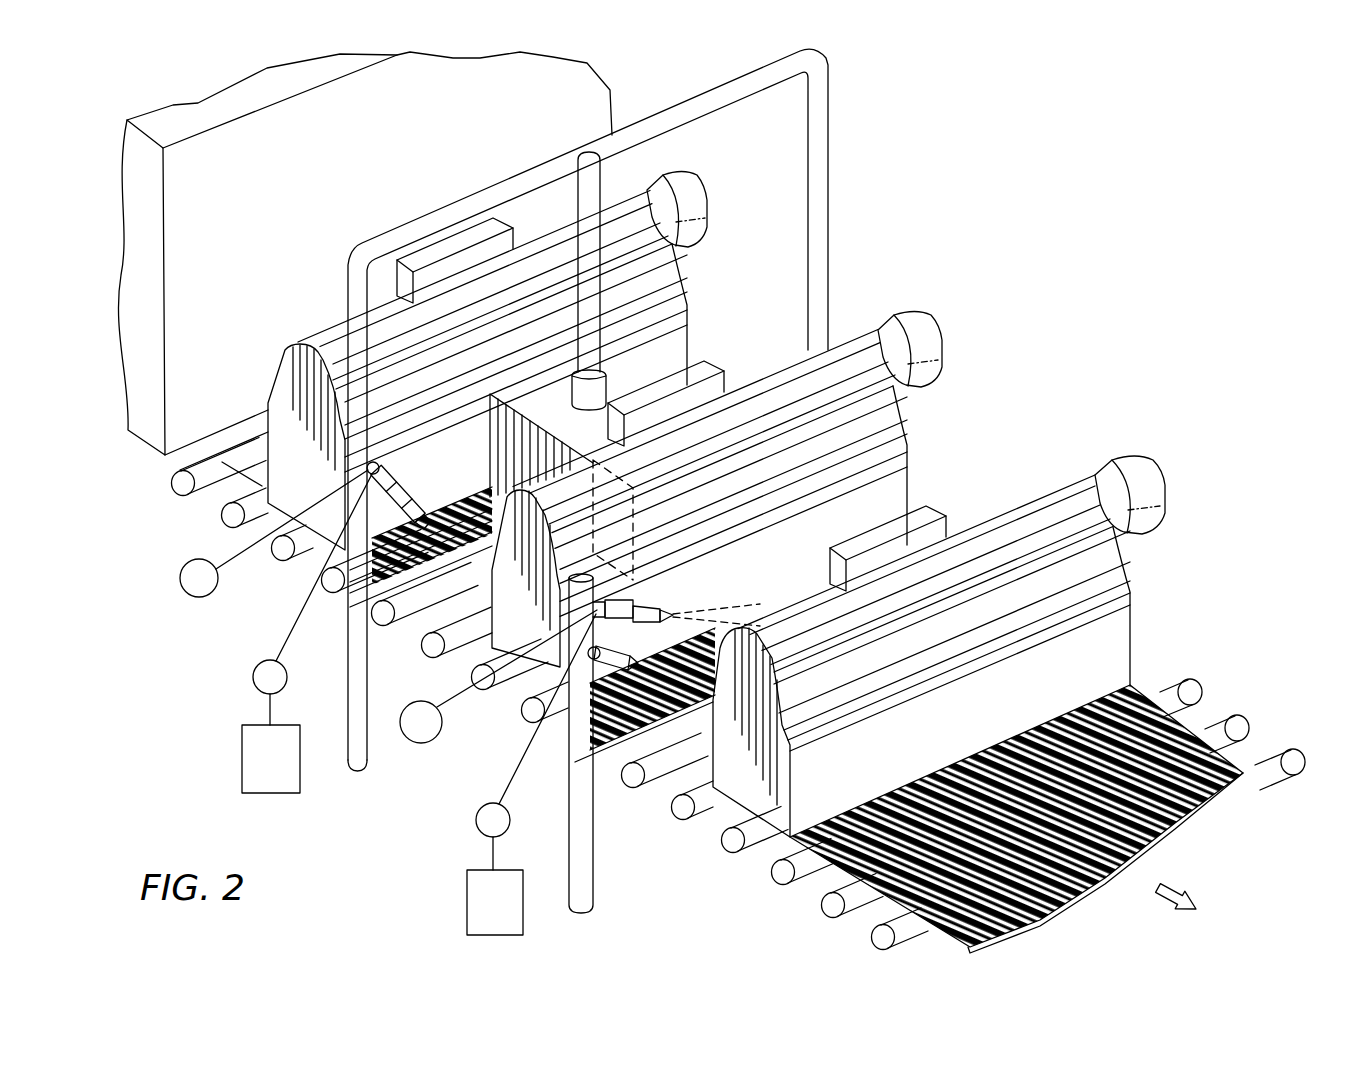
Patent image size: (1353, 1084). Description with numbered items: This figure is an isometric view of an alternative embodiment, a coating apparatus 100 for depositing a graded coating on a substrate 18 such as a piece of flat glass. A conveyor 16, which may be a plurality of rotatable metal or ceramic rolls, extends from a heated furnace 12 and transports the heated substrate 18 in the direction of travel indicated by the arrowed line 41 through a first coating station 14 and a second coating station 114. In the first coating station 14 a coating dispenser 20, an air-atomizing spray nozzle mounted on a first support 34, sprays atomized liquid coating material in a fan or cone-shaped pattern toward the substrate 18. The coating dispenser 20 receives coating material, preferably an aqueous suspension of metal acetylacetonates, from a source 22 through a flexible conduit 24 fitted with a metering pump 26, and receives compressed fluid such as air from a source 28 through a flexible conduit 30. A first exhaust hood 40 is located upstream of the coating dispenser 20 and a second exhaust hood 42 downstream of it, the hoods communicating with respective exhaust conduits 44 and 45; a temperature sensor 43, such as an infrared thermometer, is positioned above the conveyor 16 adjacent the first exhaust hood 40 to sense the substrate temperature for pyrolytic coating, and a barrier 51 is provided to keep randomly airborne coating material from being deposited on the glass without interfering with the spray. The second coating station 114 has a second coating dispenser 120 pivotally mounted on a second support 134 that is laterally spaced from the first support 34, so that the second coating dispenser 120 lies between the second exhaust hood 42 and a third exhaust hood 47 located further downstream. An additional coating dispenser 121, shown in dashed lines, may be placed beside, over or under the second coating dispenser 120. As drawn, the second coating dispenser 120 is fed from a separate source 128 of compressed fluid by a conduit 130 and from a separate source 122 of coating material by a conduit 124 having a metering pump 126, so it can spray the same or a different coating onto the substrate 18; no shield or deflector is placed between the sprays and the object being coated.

The furnace 12 is at (276, 227).
The coating station 14 is at (722, 281).
The conveyor 16 is at (971, 472).
The substrate 18 is at (208, 505).
The coating dispenser 20 is at (405, 478).
The source of coating material 22 is at (257, 772).
The flexible conduit 24 is at (289, 631).
The metering pump 26 is at (253, 672).
The source of compressed fluid 28 is at (188, 591).
The flexible conduit 30 is at (256, 546).
The first support 34 is at (348, 273).
The first exhaust hood 40 is at (695, 187).
The direction of travel 41 is at (1176, 886).
The second exhaust hood 42 is at (927, 325).
The temperature sensor 43 is at (572, 399).
The exhaust conduit 44 is at (481, 228).
The exhaust conduit 45 is at (722, 388).
The third exhaust hood 47 is at (1150, 470).
The barrier 51 is at (492, 443).
The coating apparatus 100 is at (946, 226).
The second coating station 114 is at (1102, 368).
The second coating dispenser 120 is at (658, 606).
The additional coating dispenser 121 is at (611, 646).
The source of coating material 122 is at (472, 917).
The conduit 124 is at (507, 779).
The metering pump 126 is at (476, 819).
The source of compressed fluid 128 is at (405, 743).
The conduit 130 is at (468, 697).
The second support 134 is at (598, 845).